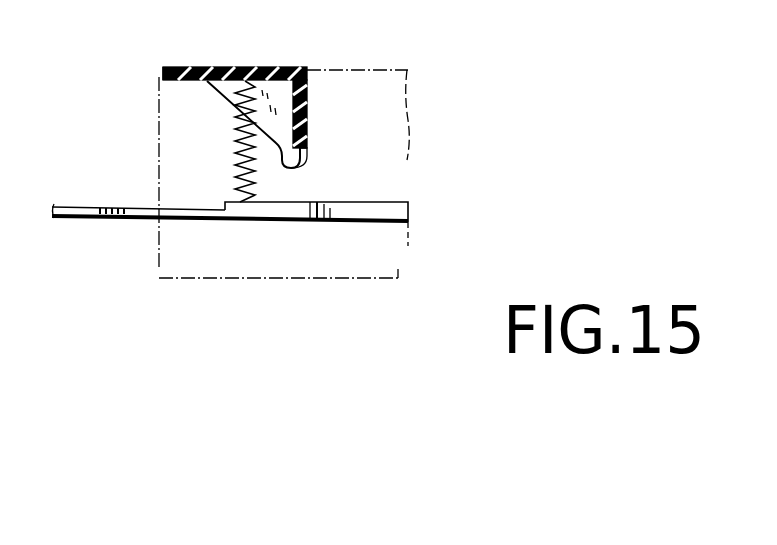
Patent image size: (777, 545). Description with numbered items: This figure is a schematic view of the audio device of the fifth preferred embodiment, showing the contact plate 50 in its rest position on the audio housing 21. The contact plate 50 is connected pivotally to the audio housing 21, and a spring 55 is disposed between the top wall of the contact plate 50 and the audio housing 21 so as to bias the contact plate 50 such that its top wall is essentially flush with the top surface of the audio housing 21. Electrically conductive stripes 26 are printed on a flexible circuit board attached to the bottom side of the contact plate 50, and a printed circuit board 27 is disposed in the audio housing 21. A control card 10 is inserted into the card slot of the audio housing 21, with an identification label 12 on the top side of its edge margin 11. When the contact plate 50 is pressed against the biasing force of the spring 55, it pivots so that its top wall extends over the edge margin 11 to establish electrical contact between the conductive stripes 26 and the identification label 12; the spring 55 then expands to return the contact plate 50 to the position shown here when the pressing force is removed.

The control card 10 is at (70, 185).
The edge margin 11 is at (208, 222).
The identification label 12 is at (203, 208).
The audio housing 21 is at (377, 68).
The electrically conductive stripes 26 is at (178, 81).
The printed circuit board 27 is at (383, 221).
The contact plate 50 is at (188, 68).
The spring 55 is at (252, 178).